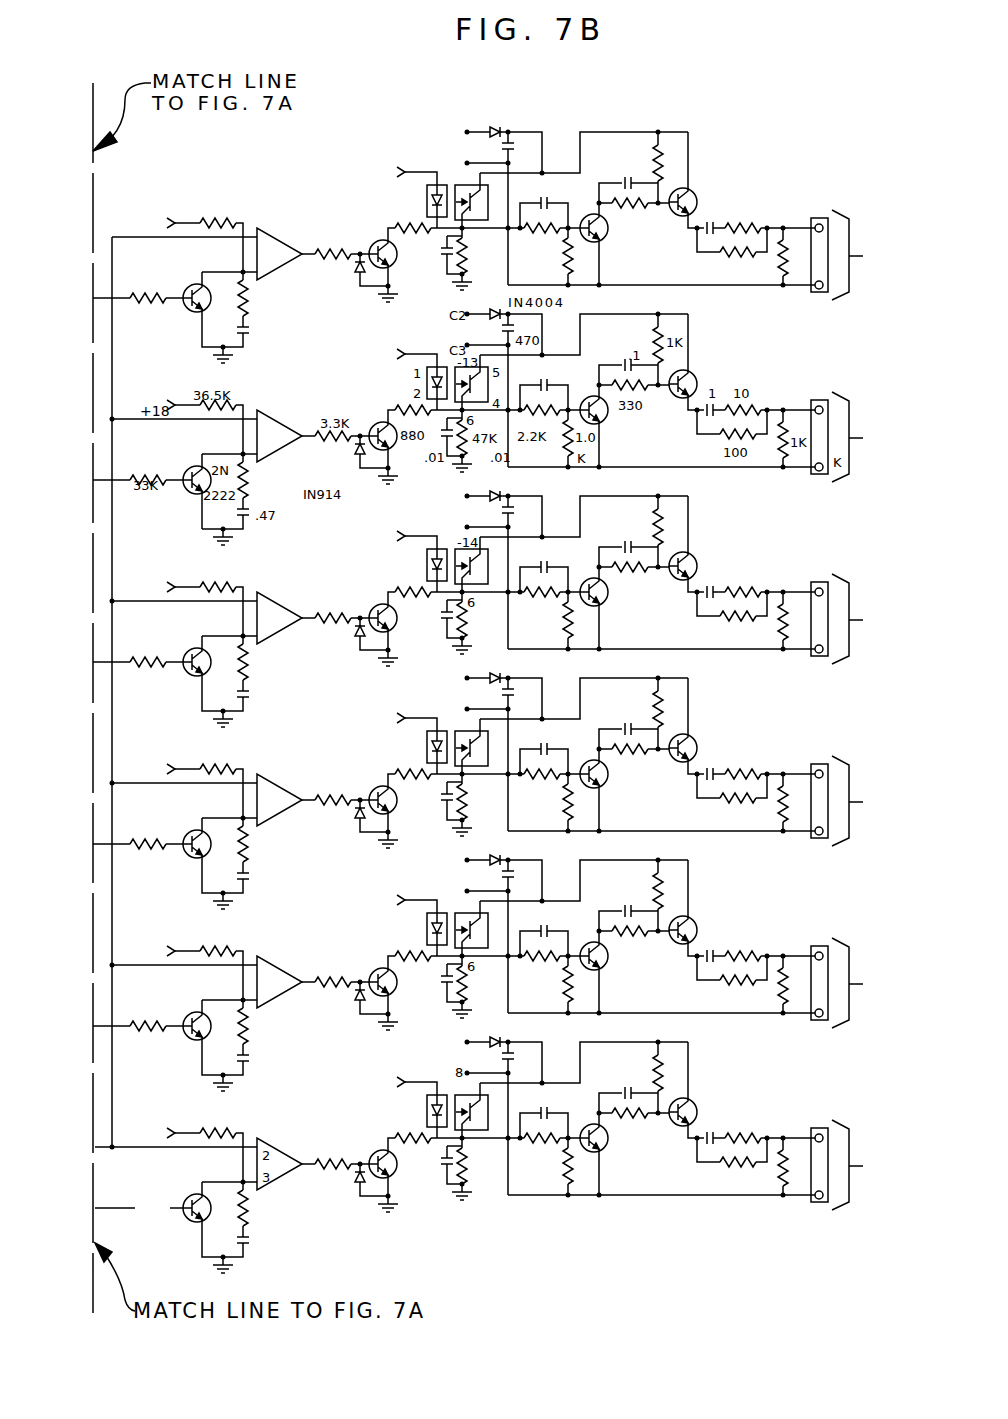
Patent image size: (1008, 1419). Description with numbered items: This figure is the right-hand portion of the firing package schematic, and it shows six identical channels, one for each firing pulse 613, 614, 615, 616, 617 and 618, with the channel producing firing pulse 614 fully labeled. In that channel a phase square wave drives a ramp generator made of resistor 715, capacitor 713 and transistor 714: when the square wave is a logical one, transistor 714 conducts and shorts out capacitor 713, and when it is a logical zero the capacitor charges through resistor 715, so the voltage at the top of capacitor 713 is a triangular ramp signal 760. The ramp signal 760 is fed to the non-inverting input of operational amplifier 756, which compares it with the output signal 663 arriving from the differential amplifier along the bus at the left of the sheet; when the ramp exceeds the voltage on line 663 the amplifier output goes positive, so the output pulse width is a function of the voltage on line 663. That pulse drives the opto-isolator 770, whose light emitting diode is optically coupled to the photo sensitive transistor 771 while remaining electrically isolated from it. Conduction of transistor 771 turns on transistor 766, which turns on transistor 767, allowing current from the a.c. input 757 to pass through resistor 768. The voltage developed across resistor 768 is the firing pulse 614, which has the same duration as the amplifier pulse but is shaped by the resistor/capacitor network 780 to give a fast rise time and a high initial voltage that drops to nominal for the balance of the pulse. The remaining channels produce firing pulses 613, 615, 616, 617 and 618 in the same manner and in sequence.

The firing pulse 613 is at (858, 255).
The firing pulse 614 is at (858, 437).
The firing pulse 615 is at (858, 619).
The firing pulse 616 is at (858, 801).
The firing pulse 617 is at (858, 983).
The firing pulse 618 is at (858, 1165).
The output signal 663 is at (112, 452).
The capacitor 713 is at (206, 529).
The transistor 714 is at (172, 486).
The resistor 715 is at (220, 466).
The operational amplifier 756 is at (282, 422).
The a.c. input 757 is at (462, 333).
The ramp signal 760 is at (255, 471).
The transistor 766 is at (619, 426).
The transistor 767 is at (710, 379).
The resistor 768 is at (755, 451).
The opto-isolator 770 is at (382, 422).
The photo sensitive transistor 771 is at (495, 382).
The resistor/capacitor network 780 is at (784, 387).